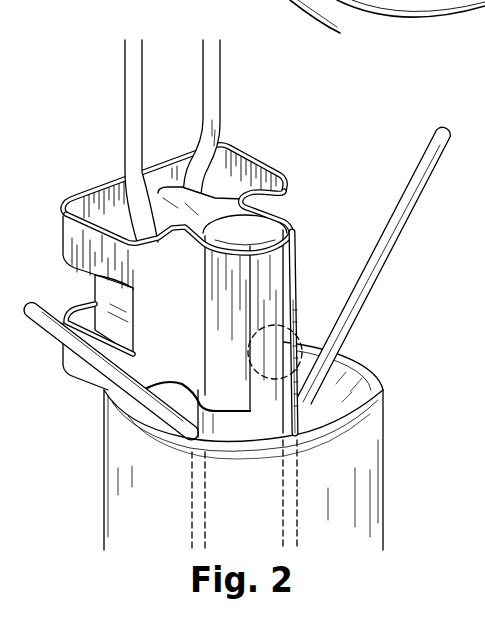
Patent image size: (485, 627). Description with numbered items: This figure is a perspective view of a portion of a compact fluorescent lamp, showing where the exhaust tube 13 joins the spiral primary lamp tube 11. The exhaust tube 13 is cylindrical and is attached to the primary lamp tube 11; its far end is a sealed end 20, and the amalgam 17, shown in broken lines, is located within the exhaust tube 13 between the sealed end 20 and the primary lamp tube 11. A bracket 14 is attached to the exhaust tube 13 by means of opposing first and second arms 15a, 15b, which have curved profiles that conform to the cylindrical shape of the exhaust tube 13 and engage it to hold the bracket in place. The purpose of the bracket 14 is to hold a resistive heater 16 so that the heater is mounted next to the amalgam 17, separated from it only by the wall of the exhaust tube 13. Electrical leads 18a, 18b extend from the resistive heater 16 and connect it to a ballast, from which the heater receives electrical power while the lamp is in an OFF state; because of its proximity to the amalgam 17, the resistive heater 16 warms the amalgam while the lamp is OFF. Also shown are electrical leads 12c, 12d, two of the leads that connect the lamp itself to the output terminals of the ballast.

The spiral primary lamp tube 11 is at (347, 487).
The electrical lead 12c is at (397, 243).
The electrical lead 12d is at (37, 322).
The exhaust tube 13 is at (267, 290).
The bracket 14 is at (62, 233).
The first arm 15a is at (295, 214).
The second arm 15b is at (203, 343).
The resistive heater 16 is at (134, 225).
The amalgam 17 is at (302, 327).
The electrical lead 18a is at (203, 86).
The electrical lead 18b is at (125, 82).
The sealed end 20 is at (262, 222).